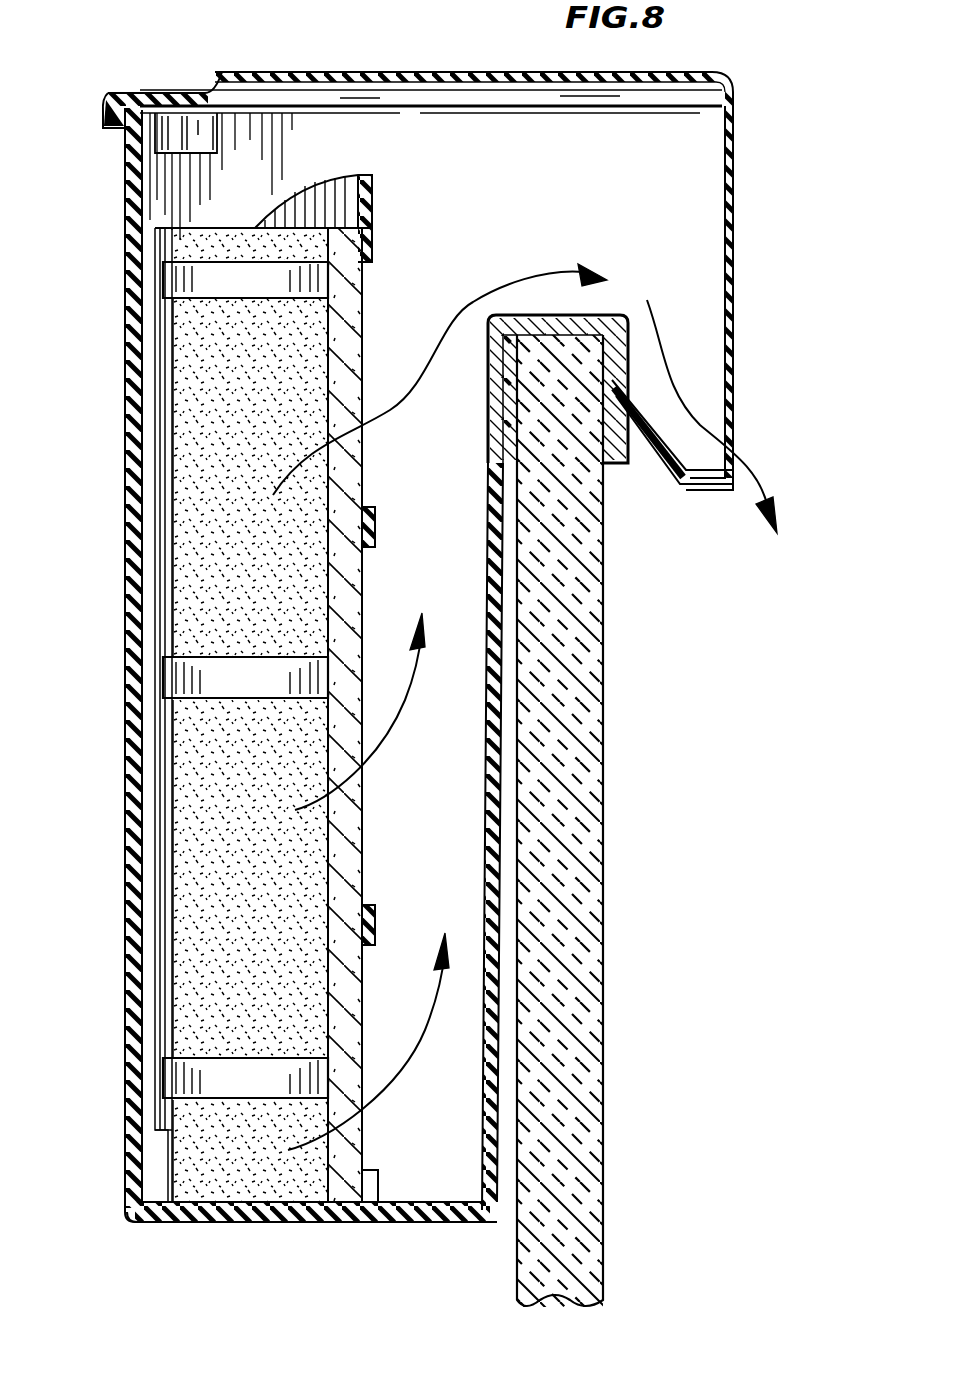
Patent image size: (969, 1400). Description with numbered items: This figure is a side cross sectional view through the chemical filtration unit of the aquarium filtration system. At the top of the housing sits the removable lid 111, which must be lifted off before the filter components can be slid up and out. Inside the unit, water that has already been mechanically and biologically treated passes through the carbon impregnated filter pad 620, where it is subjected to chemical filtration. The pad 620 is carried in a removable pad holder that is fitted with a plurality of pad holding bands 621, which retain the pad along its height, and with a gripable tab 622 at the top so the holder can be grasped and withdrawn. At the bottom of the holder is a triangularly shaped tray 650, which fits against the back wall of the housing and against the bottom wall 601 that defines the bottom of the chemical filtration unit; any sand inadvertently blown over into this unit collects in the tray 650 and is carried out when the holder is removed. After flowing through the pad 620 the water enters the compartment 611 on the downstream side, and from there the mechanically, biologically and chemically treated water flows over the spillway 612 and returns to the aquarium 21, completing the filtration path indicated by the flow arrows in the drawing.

The lid 111 is at (365, 72).
The aquarium 21 is at (597, 556).
The bottom wall 601 is at (222, 1222).
The compartment 611 is at (455, 860).
The spillway 612 is at (668, 452).
The carbon impregnated filter pad 620 is at (218, 768).
The pad holding bands 621 is at (190, 272).
The gripable tab 622 is at (343, 178).
The tray 650 is at (200, 1200).